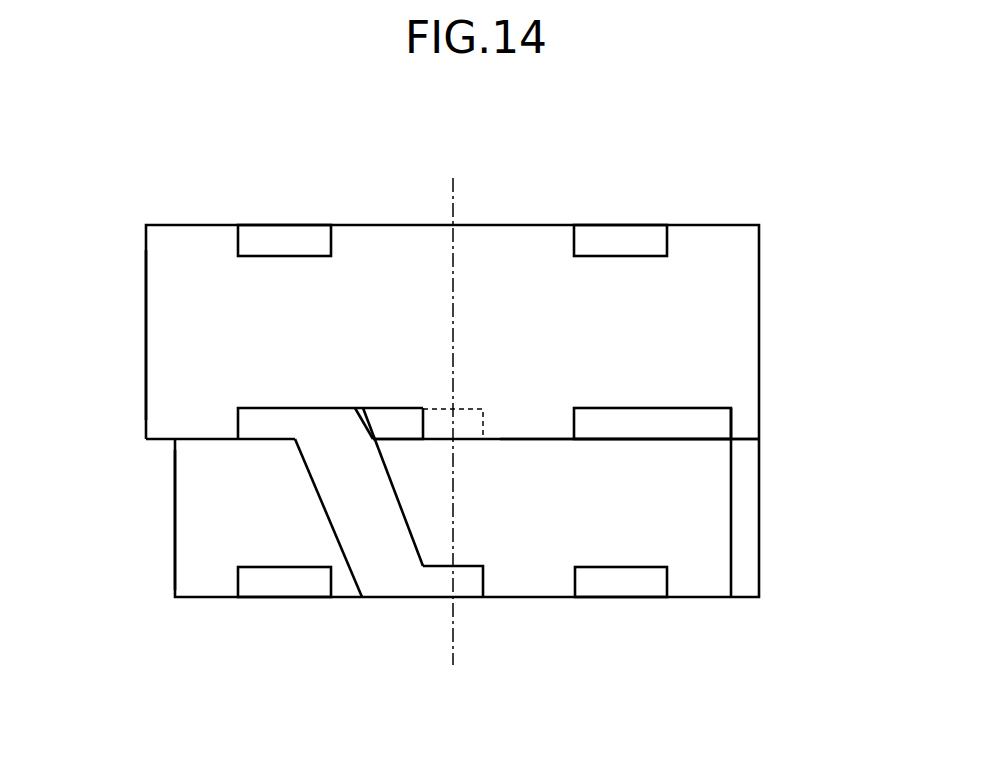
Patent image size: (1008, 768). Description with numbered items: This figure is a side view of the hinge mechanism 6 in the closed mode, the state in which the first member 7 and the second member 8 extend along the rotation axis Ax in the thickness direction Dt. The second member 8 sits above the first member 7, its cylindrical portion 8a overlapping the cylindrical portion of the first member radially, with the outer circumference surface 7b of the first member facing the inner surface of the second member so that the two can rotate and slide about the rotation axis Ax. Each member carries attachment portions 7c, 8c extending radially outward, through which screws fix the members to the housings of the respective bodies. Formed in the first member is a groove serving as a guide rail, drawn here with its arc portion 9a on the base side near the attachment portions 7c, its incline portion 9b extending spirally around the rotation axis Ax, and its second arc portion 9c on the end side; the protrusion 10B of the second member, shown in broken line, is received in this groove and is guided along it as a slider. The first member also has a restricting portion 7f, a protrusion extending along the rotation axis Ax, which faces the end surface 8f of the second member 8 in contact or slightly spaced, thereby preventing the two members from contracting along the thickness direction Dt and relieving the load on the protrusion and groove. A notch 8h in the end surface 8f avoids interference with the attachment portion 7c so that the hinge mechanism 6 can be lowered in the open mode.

The hinge mechanism 6 is at (703, 129).
The first member 7 is at (547, 598).
The outer circumference surface 7b is at (188, 503).
The attachment portion 7c is at (285, 590).
The restricting portion 7f is at (749, 507).
The second member 8 is at (759, 225).
The cylindrical portion 8a is at (152, 320).
The attachment portion 8c is at (279, 240).
The end surface 8f is at (552, 441).
The notch 8h is at (420, 423).
The arc portion 9a is at (435, 590).
The incline portion 9b is at (320, 480).
The second arc portion 9c is at (260, 420).
The protrusion 10B is at (486, 418).
The rotation axis Ax is at (454, 197).
The thickness direction Dt is at (850, 306).